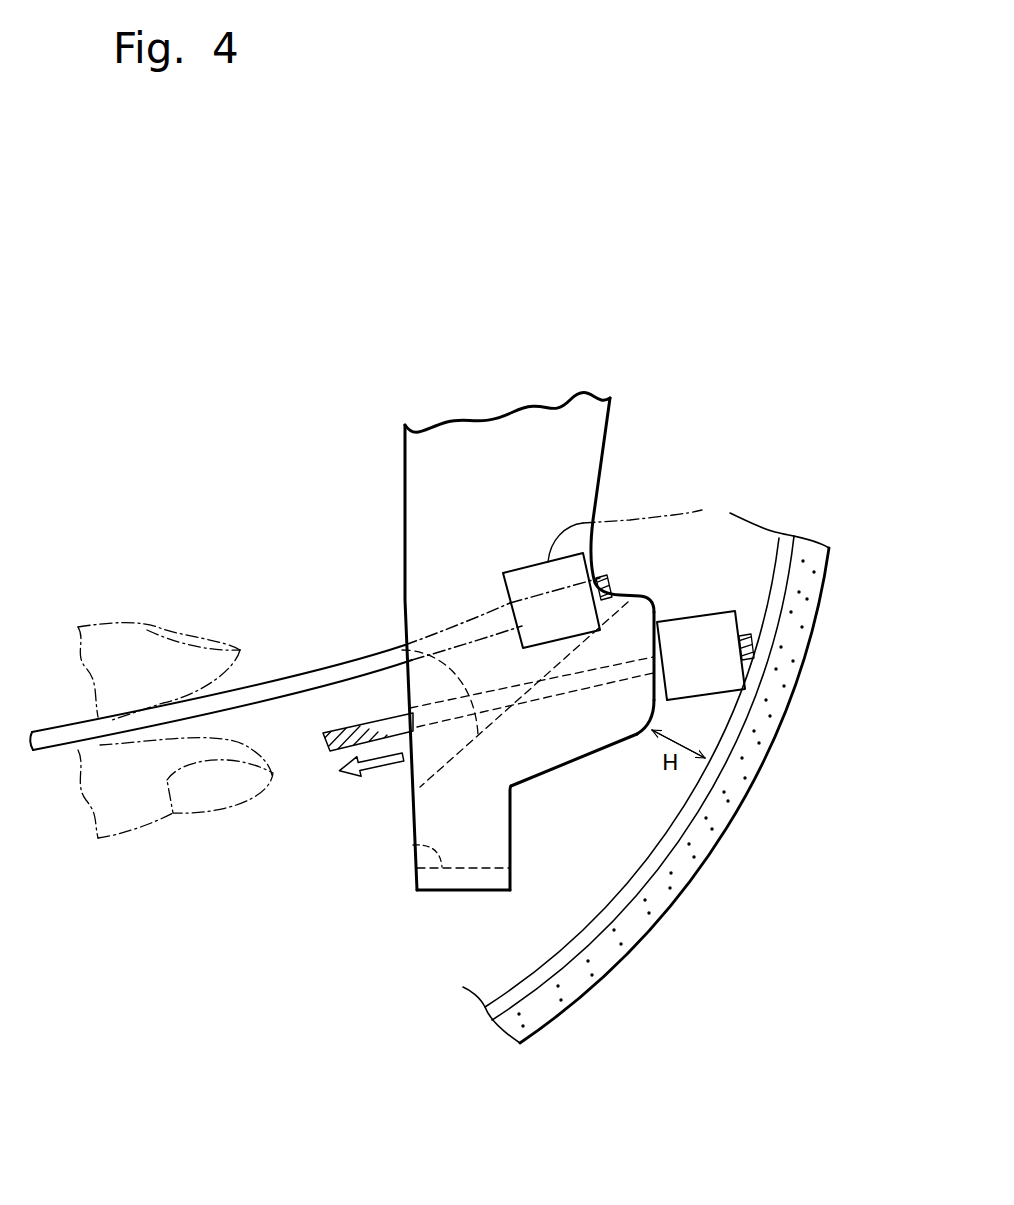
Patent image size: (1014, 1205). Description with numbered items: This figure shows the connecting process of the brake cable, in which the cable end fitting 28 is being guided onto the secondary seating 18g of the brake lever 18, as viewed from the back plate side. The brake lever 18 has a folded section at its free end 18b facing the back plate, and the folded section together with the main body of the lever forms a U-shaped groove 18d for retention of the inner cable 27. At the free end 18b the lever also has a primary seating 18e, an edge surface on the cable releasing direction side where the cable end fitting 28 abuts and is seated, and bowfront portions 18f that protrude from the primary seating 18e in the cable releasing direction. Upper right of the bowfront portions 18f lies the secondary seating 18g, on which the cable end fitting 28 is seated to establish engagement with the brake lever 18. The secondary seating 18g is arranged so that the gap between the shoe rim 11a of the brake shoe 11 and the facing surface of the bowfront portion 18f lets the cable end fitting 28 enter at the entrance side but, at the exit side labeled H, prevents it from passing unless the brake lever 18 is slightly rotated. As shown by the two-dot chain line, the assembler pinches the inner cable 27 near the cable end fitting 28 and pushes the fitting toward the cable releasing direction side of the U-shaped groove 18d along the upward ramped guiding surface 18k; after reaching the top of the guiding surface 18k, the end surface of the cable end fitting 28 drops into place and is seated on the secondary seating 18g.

The brake shoe 11 is at (632, 957).
The shoe rim 11a is at (647, 875).
The brake lever 18 is at (523, 412).
The free end 18b is at (423, 575).
The U-shaped groove 18d is at (410, 850).
The primary seating 18e is at (513, 815).
The bowfront portions 18f is at (608, 730).
The secondary seating 18g is at (657, 687).
The upward ramped guiding surface 18k is at (393, 647).
The inner cable 27 is at (317, 690).
The cable end fitting 28 is at (694, 615).